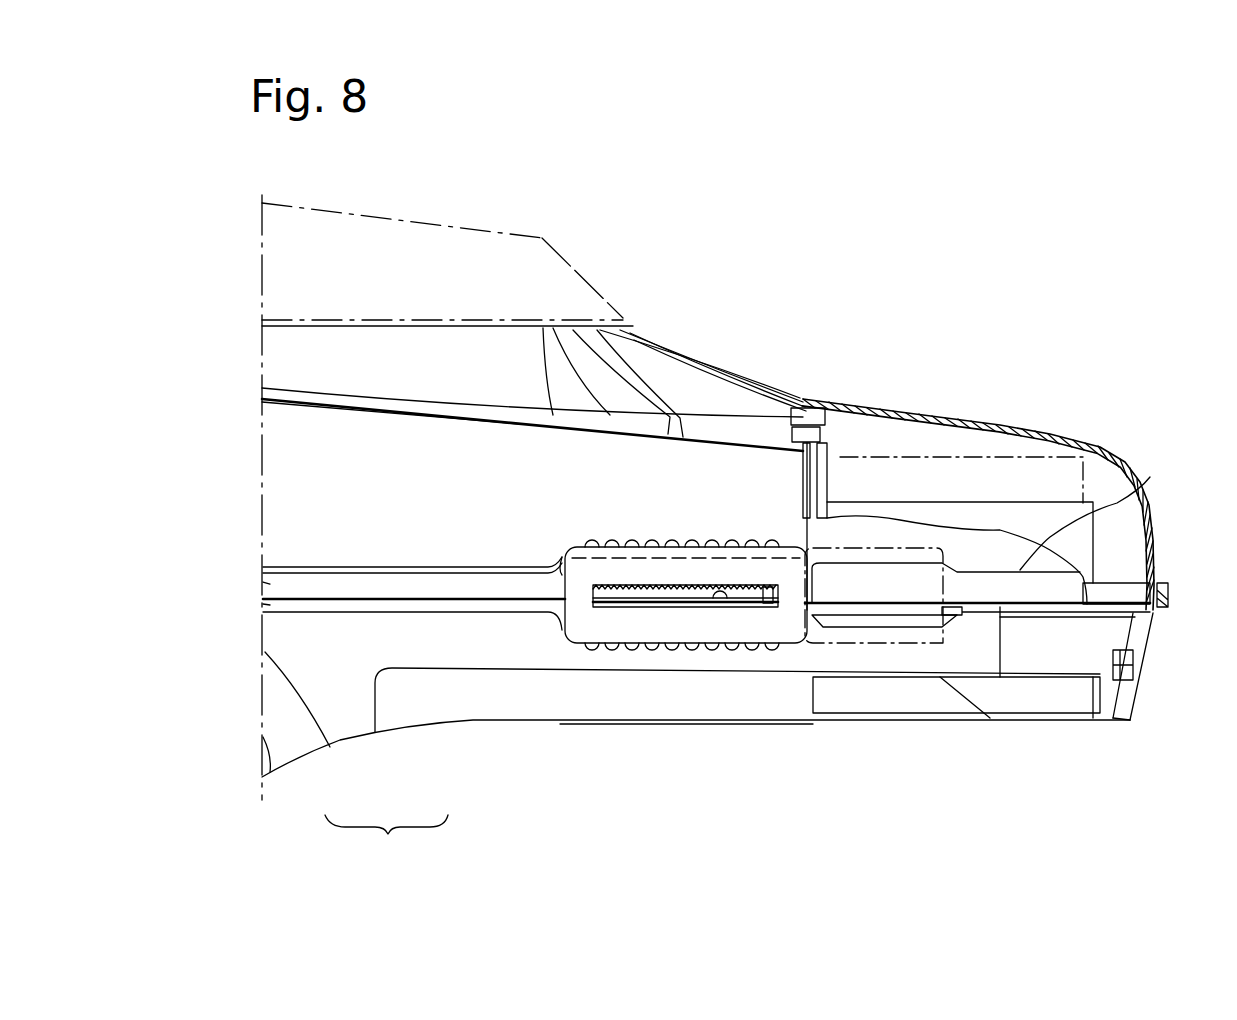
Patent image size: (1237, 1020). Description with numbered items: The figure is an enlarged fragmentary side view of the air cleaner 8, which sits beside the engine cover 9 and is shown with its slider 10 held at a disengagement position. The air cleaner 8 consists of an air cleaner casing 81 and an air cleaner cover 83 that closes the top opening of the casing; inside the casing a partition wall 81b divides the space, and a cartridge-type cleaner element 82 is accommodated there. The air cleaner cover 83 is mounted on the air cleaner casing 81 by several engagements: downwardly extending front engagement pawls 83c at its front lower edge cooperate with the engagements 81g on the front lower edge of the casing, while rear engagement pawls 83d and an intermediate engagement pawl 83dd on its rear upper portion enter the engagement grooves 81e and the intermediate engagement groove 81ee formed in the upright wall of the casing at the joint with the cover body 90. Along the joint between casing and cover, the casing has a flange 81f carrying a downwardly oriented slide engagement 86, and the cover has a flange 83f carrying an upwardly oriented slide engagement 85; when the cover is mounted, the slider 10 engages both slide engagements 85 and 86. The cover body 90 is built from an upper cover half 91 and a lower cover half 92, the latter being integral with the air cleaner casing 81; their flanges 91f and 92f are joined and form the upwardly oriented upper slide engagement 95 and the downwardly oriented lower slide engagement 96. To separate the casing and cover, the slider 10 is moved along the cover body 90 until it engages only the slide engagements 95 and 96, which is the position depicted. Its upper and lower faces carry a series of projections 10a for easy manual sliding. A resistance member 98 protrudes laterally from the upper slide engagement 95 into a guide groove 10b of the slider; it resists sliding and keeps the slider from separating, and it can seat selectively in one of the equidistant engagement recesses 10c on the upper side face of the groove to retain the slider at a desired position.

The air cleaner 8 is at (1073, 427).
The engine cover 9 is at (704, 356).
The slider 10 is at (657, 620).
The projections 10a is at (630, 545).
The guide groove 10b is at (727, 602).
The engagement recesses 10c is at (690, 595).
The air cleaner casing 81 is at (1052, 667).
The partition wall 81b is at (1077, 537).
The engagement grooves 81e is at (806, 408).
The intermediate engagement groove 81ee is at (828, 442).
The flange 81f is at (1000, 677).
The engagements 81g is at (1142, 715).
The cleaner element 82 is at (1093, 460).
The air cleaner cover 83 is at (993, 540).
The front engagement pawls 83c is at (1140, 650).
The rear engagement pawls 83d is at (812, 410).
The intermediate engagement pawl 83dd is at (821, 430).
The flange 83f is at (1150, 477).
The slide engagement 85 is at (873, 565).
The slide engagement 86 is at (893, 628).
The cover body 90 is at (386, 841).
The upper cover half 91 is at (383, 530).
The flange 91f is at (268, 583).
The lower cover half 92 is at (510, 628).
The flange 92f is at (268, 605).
The upper slide engagement 95 is at (557, 566).
The lower slide engagement 96 is at (555, 636).
The resistance member 98 is at (767, 594).